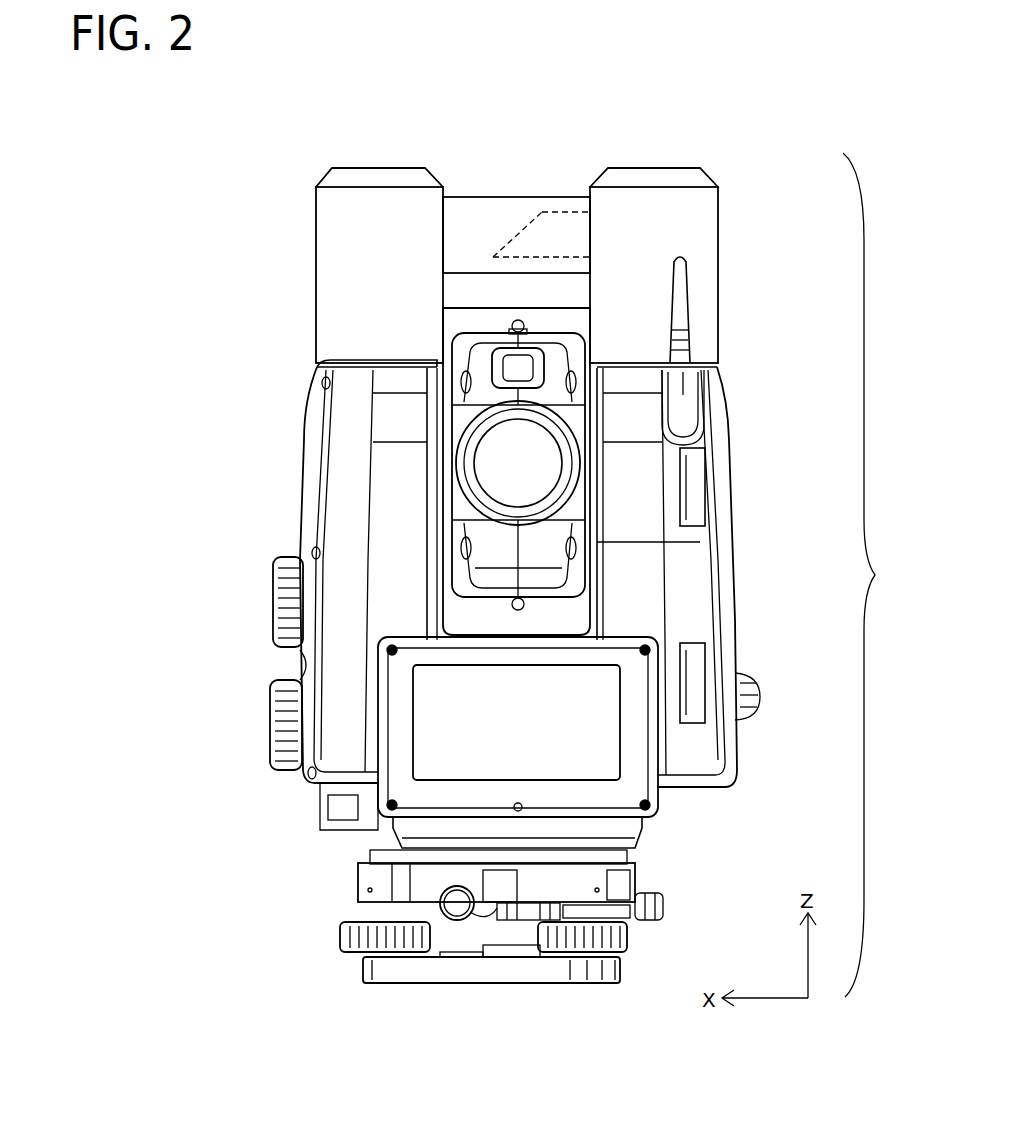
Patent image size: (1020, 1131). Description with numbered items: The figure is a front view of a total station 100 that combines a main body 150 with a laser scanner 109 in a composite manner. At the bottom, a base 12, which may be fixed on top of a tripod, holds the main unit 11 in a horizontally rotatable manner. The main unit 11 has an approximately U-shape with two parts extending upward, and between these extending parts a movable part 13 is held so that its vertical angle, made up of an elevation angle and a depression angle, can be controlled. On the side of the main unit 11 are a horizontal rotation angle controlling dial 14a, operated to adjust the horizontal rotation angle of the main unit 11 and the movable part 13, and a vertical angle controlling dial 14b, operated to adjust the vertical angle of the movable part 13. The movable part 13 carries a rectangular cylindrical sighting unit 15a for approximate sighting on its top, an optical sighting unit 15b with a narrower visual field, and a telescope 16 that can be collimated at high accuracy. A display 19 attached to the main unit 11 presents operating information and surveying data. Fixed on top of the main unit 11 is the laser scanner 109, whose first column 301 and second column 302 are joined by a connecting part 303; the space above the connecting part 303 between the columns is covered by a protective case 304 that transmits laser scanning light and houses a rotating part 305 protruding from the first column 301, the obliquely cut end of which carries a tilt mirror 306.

The total station 100 is at (885, 575).
The laser scanner 109 is at (475, 235).
The first column 301 is at (653, 210).
The second column 302 is at (345, 195).
The connecting part 303 is at (465, 290).
The protective case 304 is at (467, 197).
The rotating part 305 is at (568, 232).
The tilt mirror 306 is at (518, 232).
The sighting unit 15a is at (505, 324).
The optical sighting unit 15b is at (548, 350).
The telescope 16 is at (538, 455).
The movable part 13 is at (540, 565).
The main unit 11 is at (338, 474).
The main body 150 is at (732, 497).
The horizontal rotation angle controlling dial 14a is at (273, 580).
The vertical angle controlling dial 14b is at (270, 702).
The display 19 is at (600, 765).
The base 12 is at (380, 882).